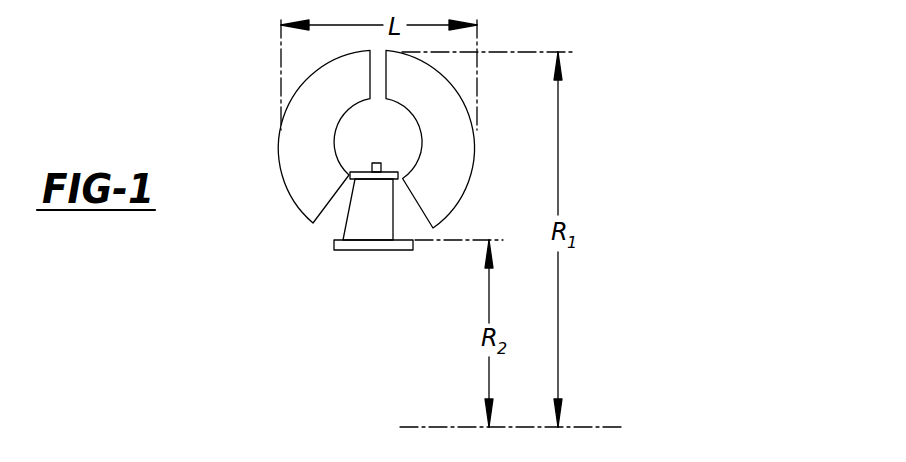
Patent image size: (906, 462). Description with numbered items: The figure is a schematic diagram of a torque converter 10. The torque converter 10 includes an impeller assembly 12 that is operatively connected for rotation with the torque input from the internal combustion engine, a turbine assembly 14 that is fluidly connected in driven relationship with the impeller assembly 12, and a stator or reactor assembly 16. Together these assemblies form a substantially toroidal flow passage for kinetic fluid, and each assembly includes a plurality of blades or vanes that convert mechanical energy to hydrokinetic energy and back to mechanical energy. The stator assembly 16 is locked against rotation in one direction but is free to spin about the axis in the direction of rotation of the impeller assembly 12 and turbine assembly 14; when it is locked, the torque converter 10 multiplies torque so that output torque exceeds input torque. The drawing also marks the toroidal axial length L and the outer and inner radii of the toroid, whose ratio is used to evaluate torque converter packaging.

The torque converter 10 is at (379, 151).
The impeller assembly 12 is at (473, 167).
The turbine assembly 14 is at (296, 175).
The stator assembly 16 is at (348, 222).